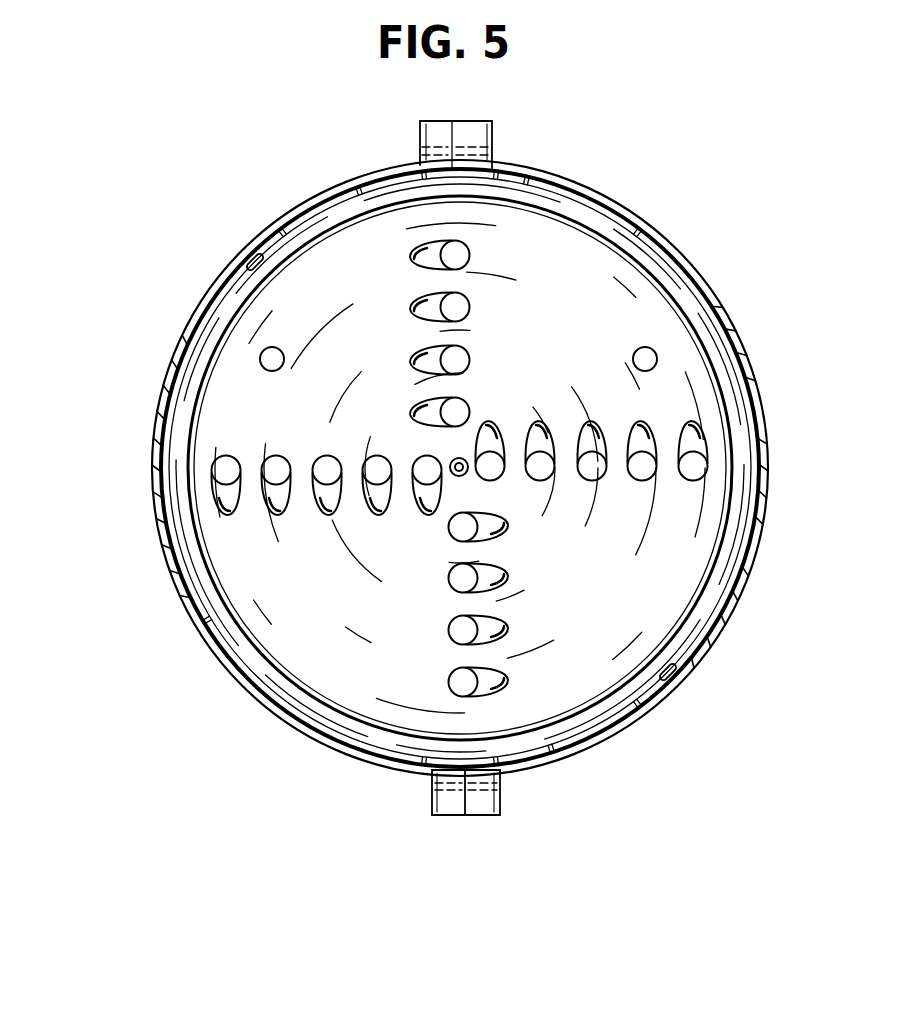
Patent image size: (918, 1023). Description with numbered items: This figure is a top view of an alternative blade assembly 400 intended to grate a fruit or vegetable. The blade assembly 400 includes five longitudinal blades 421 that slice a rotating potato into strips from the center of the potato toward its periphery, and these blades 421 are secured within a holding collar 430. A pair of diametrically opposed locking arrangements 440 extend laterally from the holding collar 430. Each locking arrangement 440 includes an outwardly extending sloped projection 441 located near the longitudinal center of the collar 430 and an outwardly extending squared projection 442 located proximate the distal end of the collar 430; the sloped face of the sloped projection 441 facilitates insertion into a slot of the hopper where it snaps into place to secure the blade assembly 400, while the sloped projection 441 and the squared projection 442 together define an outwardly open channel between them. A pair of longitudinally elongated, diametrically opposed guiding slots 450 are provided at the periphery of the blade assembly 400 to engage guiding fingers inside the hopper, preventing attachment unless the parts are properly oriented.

The blade assembly 400 is at (175, 233).
The longitudinal blades 421 is at (440, 416).
The holding collar 430 is at (183, 590).
The locking arrangements 440 is at (463, 476).
The sloped projection 441 is at (497, 140).
The squared projection 442 is at (420, 127).
The guiding slots 450 is at (250, 259).